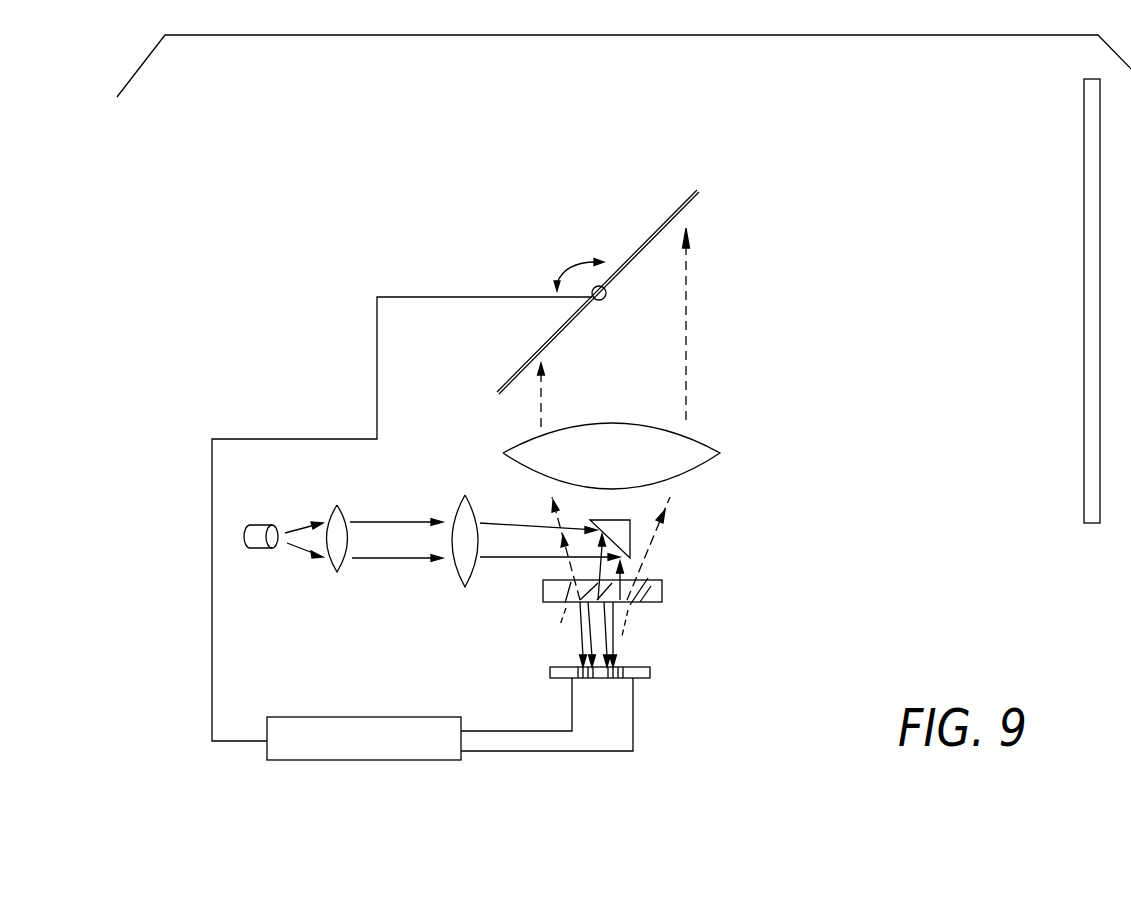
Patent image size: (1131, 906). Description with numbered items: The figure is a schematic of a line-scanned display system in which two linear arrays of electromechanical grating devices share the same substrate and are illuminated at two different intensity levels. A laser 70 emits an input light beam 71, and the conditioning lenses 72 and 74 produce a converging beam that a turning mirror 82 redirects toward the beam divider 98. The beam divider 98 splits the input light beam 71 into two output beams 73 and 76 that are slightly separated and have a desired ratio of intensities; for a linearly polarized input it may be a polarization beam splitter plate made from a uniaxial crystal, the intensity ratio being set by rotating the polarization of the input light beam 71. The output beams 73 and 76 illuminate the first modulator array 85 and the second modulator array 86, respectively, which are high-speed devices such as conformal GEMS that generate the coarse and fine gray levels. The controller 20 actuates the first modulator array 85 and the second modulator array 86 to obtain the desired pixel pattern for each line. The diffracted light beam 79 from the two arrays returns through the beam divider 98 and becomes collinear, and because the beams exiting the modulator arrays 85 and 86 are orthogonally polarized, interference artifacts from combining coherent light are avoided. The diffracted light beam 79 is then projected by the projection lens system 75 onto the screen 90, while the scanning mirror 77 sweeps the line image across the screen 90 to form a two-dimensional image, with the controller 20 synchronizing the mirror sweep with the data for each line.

The controller 20 is at (384, 717).
The laser 70 is at (255, 549).
The input light beam 71 is at (298, 522).
The conditioning lens 72 is at (340, 506).
The output beam 73 is at (580, 627).
The conditioning lens 74 is at (461, 505).
The projection lens system 75 is at (703, 442).
The output beam 76 is at (616, 628).
The scanning mirror 77 is at (652, 238).
The diffracted light beam 79 is at (687, 298).
The turning mirror 82 is at (631, 541).
The first modulator array 85 is at (585, 680).
The second modulator array 86 is at (623, 680).
The screen 90 is at (1083, 380).
The beam divider 98 is at (663, 591).